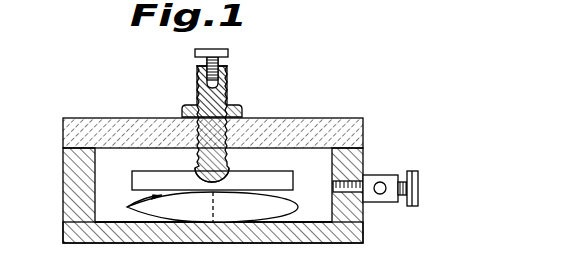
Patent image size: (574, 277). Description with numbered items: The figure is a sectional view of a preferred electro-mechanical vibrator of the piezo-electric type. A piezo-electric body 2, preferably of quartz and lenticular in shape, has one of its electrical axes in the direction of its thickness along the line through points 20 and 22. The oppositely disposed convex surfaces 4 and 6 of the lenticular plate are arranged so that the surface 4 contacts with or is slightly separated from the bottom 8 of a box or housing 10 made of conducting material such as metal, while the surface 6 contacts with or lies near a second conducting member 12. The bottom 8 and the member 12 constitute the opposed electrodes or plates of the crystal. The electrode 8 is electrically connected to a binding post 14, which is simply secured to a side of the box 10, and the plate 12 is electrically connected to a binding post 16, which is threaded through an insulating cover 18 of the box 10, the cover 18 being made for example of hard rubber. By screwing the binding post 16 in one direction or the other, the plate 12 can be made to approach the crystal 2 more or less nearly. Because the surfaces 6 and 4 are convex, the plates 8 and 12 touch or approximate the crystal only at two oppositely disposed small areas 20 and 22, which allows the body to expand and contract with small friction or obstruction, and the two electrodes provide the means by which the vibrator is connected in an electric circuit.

The piezo-electric body 2 is at (200, 193).
The convex surface 4 is at (213, 212).
The convex surface 6 is at (156, 199).
The bottom of the box 8 is at (250, 230).
The box or housing 10 is at (369, 156).
The conducting member or plate 12 is at (277, 182).
The binding post 14 is at (420, 176).
The binding post 16 is at (231, 119).
The insulating cover 18 is at (93, 124).
The contact point 20 is at (208, 223).
The contact point 22 is at (227, 190).